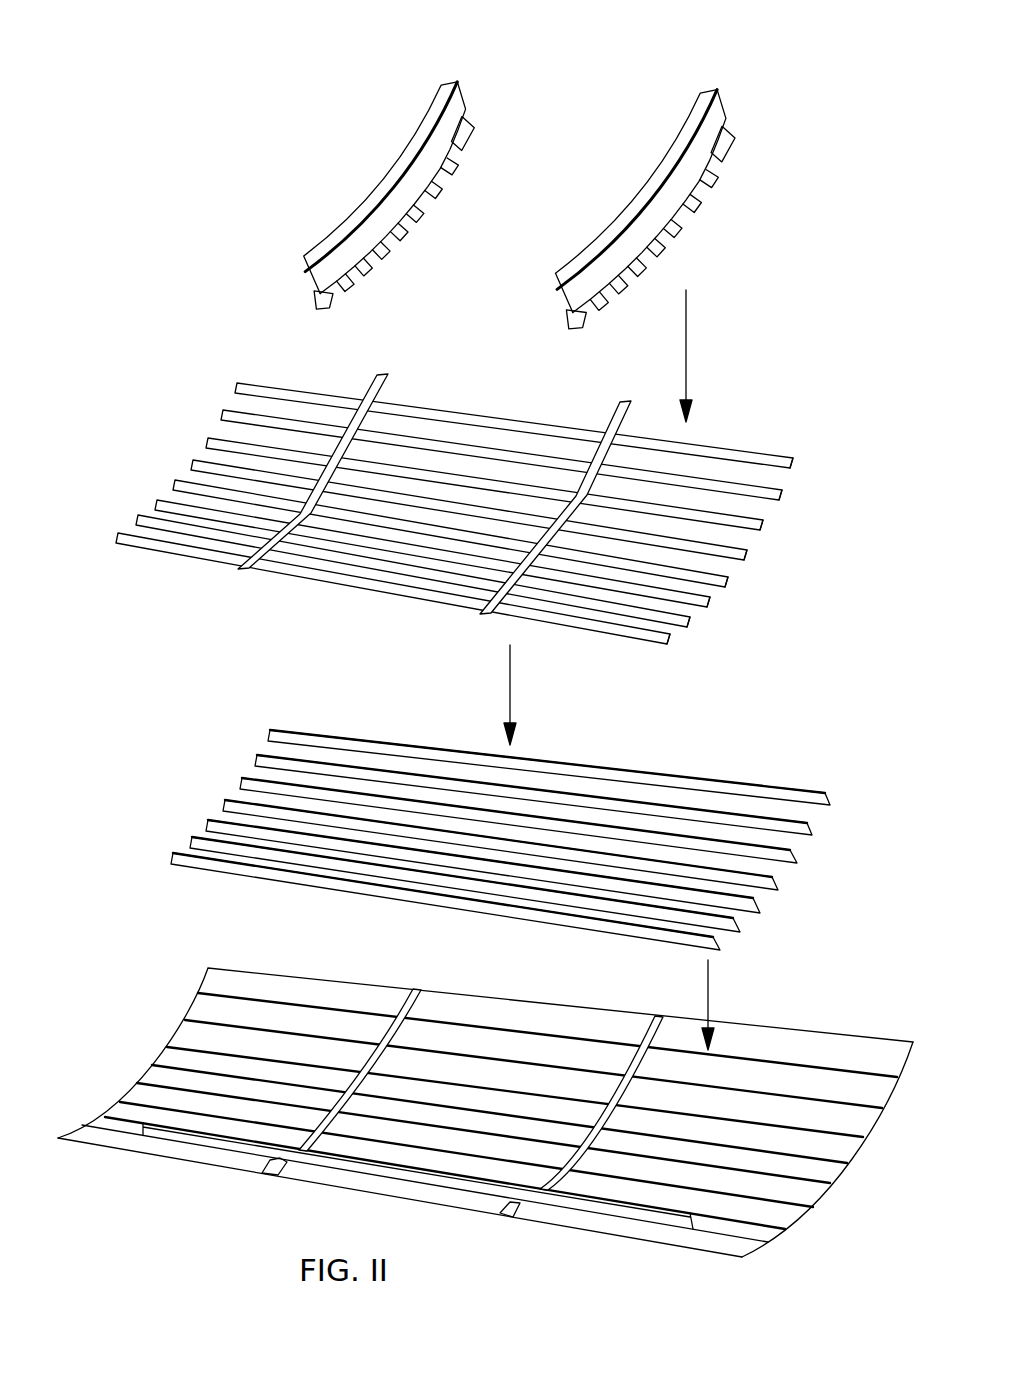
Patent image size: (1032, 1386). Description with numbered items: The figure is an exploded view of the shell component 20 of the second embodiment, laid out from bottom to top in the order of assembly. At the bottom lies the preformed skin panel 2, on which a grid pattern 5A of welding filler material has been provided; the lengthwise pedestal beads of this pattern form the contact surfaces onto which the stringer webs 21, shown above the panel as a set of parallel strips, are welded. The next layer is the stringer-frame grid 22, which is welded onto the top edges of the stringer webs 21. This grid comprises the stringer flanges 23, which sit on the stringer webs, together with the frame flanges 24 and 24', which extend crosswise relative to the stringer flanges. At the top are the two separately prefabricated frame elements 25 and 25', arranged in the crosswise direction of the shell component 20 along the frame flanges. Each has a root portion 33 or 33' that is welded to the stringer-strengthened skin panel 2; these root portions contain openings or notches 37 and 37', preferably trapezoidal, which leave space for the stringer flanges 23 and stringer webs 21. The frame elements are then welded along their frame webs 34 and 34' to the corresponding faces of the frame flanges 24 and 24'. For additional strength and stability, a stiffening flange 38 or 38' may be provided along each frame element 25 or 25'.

The skin panel 2 is at (217, 1160).
The grid pattern 5A is at (815, 1183).
The shell component 20 is at (150, 1047).
The stringer webs 21 is at (173, 855).
The stringer-frame grid 22 is at (188, 446).
The stringer flanges 23 is at (795, 462).
The frame flange 24 is at (525, 523).
The frame flange 24' is at (310, 498).
The frame element 25 is at (661, 188).
The frame element 25' is at (408, 176).
The root portion 33 is at (671, 240).
The root portion 33' is at (409, 225).
The frame web 34 is at (541, 306).
The frame web 34' is at (285, 286).
The stringer openings or notches 37 is at (669, 201).
The openings or notches 37' is at (413, 188).
The stiffening flange 38 is at (748, 133).
The stiffening flange 38' is at (491, 129).